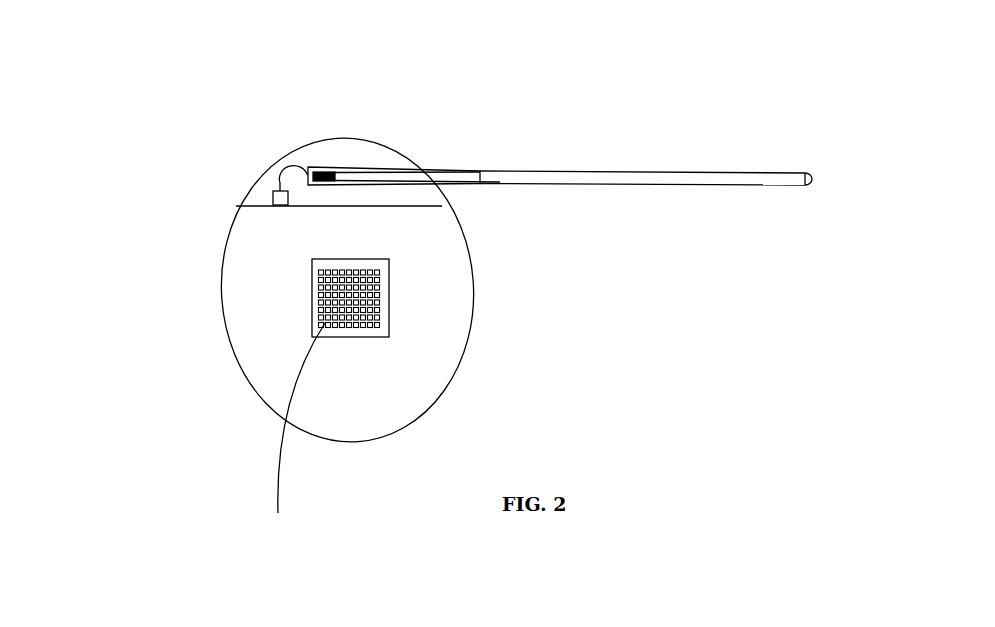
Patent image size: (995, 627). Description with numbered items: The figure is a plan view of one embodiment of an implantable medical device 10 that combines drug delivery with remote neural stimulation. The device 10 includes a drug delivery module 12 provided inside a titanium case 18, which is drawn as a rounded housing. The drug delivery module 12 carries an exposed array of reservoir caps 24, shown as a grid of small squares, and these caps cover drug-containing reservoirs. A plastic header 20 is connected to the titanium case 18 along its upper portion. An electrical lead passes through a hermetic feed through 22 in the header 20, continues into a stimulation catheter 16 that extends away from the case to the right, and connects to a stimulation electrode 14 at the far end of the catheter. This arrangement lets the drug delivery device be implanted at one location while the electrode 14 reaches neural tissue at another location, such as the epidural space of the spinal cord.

The implantable medical device 10 is at (415, 92).
The drug delivery module 12 is at (405, 284).
The stimulation electrode 14 is at (813, 189).
The stimulation catheter 16 is at (482, 160).
The titanium case 18 is at (220, 290).
The plastic header 20 is at (265, 167).
The hermetic feed through 22 is at (270, 195).
The reservoir caps 24 is at (296, 435).